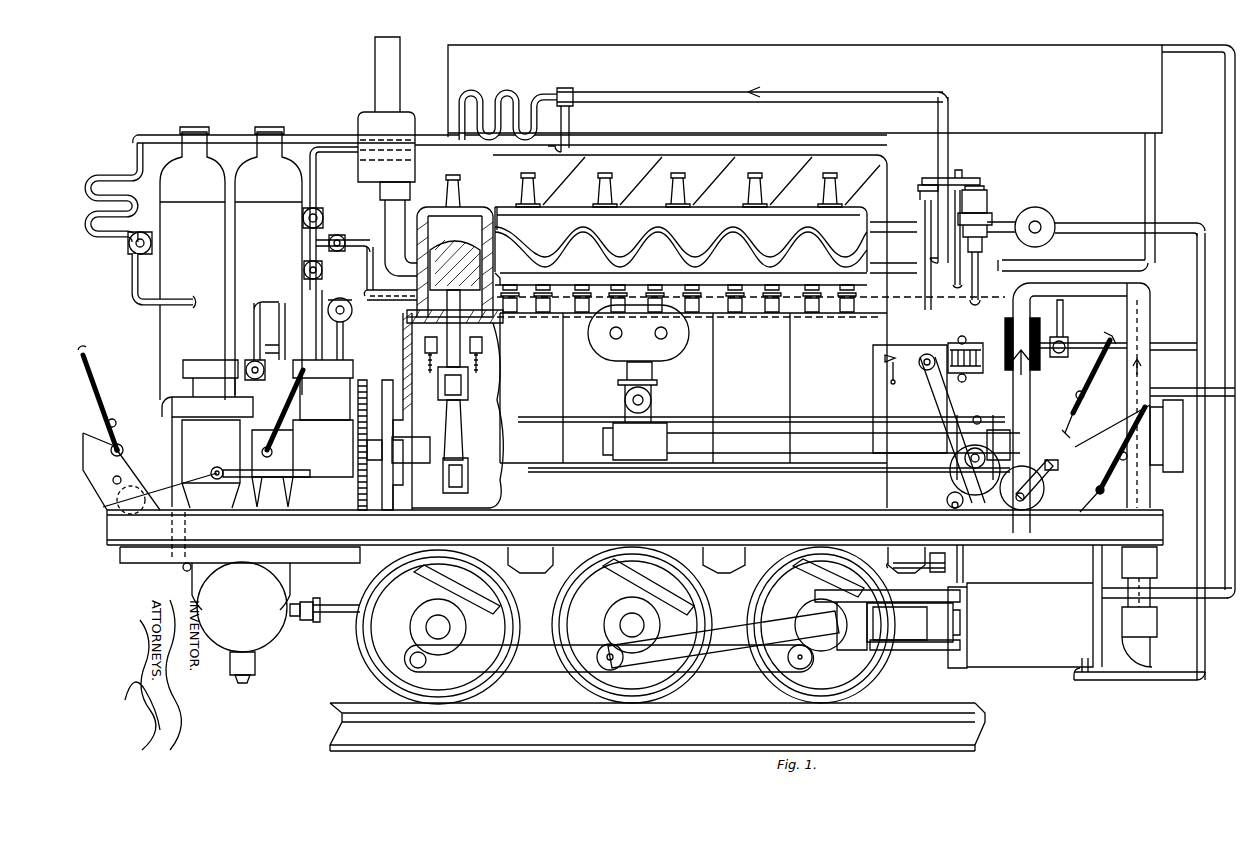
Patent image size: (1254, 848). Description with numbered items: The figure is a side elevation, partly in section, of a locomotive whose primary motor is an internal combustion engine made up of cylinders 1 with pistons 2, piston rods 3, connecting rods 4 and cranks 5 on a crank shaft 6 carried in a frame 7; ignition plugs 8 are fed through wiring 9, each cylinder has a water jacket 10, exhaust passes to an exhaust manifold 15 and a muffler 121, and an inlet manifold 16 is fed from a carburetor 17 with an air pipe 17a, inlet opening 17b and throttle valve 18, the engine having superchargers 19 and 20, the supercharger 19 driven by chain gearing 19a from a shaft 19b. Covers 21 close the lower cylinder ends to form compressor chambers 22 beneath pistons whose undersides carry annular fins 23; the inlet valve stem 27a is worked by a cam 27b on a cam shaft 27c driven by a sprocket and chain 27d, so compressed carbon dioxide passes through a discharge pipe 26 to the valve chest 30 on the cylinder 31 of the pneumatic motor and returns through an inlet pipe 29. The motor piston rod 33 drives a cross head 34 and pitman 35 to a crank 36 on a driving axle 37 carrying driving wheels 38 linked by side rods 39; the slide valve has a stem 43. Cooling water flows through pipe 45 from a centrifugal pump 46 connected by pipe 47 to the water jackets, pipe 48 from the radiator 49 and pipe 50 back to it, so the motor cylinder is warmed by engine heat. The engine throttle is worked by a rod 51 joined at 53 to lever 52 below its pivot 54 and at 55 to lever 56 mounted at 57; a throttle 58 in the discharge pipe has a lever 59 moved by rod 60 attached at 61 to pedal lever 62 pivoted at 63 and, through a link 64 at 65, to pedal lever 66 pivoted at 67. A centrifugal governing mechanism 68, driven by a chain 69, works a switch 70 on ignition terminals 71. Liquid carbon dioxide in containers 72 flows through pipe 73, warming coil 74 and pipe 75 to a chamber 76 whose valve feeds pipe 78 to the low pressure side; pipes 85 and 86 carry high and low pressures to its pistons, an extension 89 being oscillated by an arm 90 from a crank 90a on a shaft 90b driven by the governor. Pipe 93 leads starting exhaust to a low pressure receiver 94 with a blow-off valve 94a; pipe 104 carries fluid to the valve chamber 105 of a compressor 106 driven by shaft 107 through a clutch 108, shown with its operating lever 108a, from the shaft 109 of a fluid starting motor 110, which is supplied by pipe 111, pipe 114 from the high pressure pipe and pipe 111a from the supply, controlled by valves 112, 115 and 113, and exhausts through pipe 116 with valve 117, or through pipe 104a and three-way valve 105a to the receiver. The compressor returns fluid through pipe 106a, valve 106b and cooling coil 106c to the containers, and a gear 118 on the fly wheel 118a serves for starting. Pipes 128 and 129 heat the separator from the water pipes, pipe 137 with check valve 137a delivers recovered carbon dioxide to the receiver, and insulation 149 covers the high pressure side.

The cylinders 1 is at (485, 187).
The pistons 2 is at (455, 250).
The piston rods 3 is at (462, 347).
The connecting rods 4 is at (456, 420).
The cranks 5 is at (477, 470).
The crank shaft 6 is at (457, 415).
The frame 7 is at (405, 382).
The ignition plugs 8 is at (458, 196).
The wiring 9 is at (598, 157).
The water jacket 10 is at (472, 210).
The exhaust manifold 15 is at (546, 216).
The inlet manifold 16 is at (695, 278).
The carburetor 17 is at (656, 430).
The pipe 17a is at (830, 432).
The inlet opening 17b is at (1172, 473).
The throttle valve 18 is at (655, 400).
The supercharger 19 is at (985, 420).
The chain gearing 19a is at (982, 505).
The shaft 19b is at (954, 510).
The supercharger 20 is at (684, 338).
The covers 21 is at (410, 332).
The compressor chambers 22 is at (494, 320).
The annular fins 23 is at (430, 271).
The discharge pipe 26 is at (1045, 297).
The stem 27a is at (484, 357).
The cam 27b is at (480, 382).
The cam shaft 27c is at (490, 378).
The sprocket and chain 27d is at (440, 427).
The inlet pipe 29 is at (1160, 545).
The valve chest 30 is at (1025, 578).
The cylinder 31 is at (1030, 657).
The piston rod 33 is at (900, 645).
The cross head 34 is at (832, 652).
The pitman 35 is at (707, 640).
The cranks 36 is at (604, 650).
The driving axles 37 is at (627, 624).
The driving wheels 38 is at (557, 583).
The side rods 39 is at (540, 673).
The valve stem 43 is at (896, 567).
The pipe 45 is at (1200, 634).
The centrifugal pump 46 is at (1050, 236).
The pipe 47 is at (876, 222).
The pipe 48 is at (1078, 262).
The radiator 49 is at (1160, 92).
The pipe 50 is at (1226, 141).
The rod 51 is at (742, 418).
The lever 52 is at (1093, 368).
The connection point 53 is at (1080, 414).
The pivotal mounting 54 is at (1077, 392).
The connection point 55 is at (116, 420).
The lever 56 is at (100, 392).
The mounting 57 is at (123, 450).
The throttle 58 is at (1043, 490).
The control lever 59 is at (1058, 464).
The rod 60 is at (877, 472).
The connection point 61 is at (1120, 470).
The pedal lever 62 is at (1127, 457).
The pivotal mounting 63 is at (1105, 490).
The link 64 is at (195, 482).
The connection point 65 is at (107, 507).
The pedal lever 66 is at (100, 462).
The pivotal mounting 67 is at (113, 482).
The centrifugal governing mechanism 68 is at (966, 340).
The chain 69 is at (922, 400).
The switch 70 is at (890, 378).
The terminals 71 is at (884, 358).
The containers 72 is at (210, 168).
The pipe 73 is at (442, 136).
The warming coil 74 is at (478, 97).
The pipe 75 is at (822, 92).
The chamber 76 is at (985, 262).
The pipe 78 is at (966, 302).
The pipe 85 is at (957, 270).
The pipe 86 is at (981, 288).
The extension 89 is at (988, 190).
The arm 90 is at (954, 178).
The crank 90a is at (928, 178).
The shaft 90b is at (942, 245).
The pipe 93 is at (335, 614).
The low pressure receiver 94 is at (256, 641).
The blow-off valve 94a is at (245, 684).
The pipe 104 is at (186, 570).
The pipe 104a is at (253, 330).
The valve chamber 105 is at (190, 360).
The three-way valve 105a is at (246, 366).
The compressor 106 is at (183, 441).
The pipe 106a is at (165, 300).
The valve 106b is at (128, 247).
The cooling coil 106c is at (120, 172).
The shaft 107 is at (226, 478).
The clutch 108 is at (282, 441).
The pivot 108a is at (285, 396).
The shaft 109 is at (290, 452).
The starting motor 110 is at (390, 392).
The pipe 111 is at (322, 342).
The pipe 111a is at (317, 182).
The valve 112 is at (323, 270).
The valve 113 is at (323, 218).
The pipe 114 is at (366, 247).
The valve 115 is at (340, 236).
The pipe 116 is at (288, 341).
The valve 117 is at (349, 318).
The gear 118 is at (357, 486).
The fly wheel 118a is at (382, 508).
The muffler 121 is at (365, 125).
The pipe 128 is at (1165, 345).
The pipe 129 is at (1165, 390).
The pipe 137 is at (322, 604).
The check valve 137a is at (305, 620).
The insulation 149 is at (1065, 340).